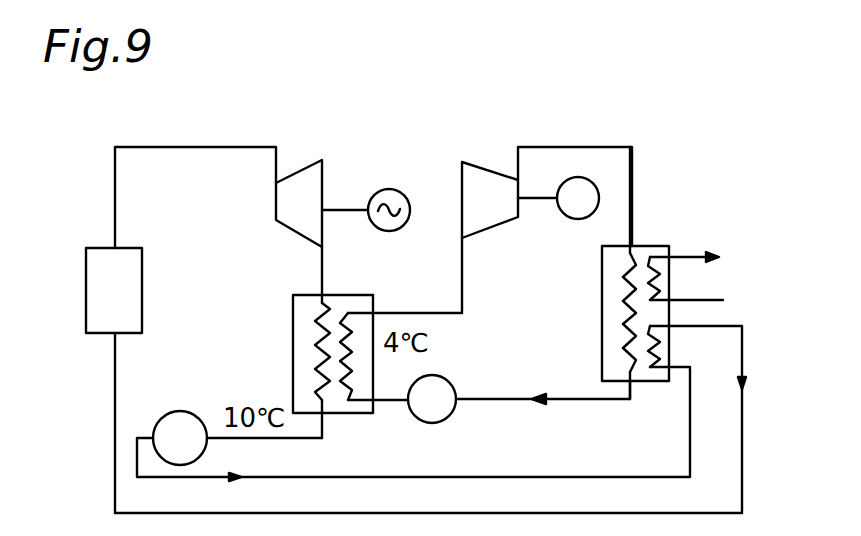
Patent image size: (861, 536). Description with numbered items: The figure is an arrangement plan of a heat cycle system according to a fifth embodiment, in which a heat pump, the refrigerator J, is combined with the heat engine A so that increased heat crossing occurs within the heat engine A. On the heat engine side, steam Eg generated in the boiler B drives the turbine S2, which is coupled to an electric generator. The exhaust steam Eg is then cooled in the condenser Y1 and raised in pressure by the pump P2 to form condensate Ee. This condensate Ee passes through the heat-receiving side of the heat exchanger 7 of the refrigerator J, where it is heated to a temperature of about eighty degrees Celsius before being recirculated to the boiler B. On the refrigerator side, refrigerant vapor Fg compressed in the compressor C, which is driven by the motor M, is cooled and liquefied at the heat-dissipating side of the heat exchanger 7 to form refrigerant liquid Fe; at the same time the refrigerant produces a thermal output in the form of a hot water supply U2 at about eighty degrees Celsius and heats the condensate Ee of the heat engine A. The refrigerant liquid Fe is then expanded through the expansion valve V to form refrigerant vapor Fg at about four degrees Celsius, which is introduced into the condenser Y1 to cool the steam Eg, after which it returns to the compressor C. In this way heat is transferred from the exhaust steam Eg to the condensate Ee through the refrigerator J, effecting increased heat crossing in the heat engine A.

The heat engine A is at (230, 134).
The refrigerator J is at (505, 132).
The heat exchanger 7 is at (645, 246).
The condenser Y1 is at (293, 330).
The boiler B is at (114, 290).
The turbine S2 is at (343, 203).
The compressor C is at (509, 200).
The motor M is at (578, 198).
The expansion valve V is at (432, 399).
The pump P2 is at (413, 422).
The steam Eg is at (266, 207).
The water (feedwater or condensate) Ee is at (234, 464).
The refrigerant gas Fg is at (472, 271).
The refrigerant liquid Fe is at (543, 407).
The thermal output (hot water supply) U2 is at (719, 259).